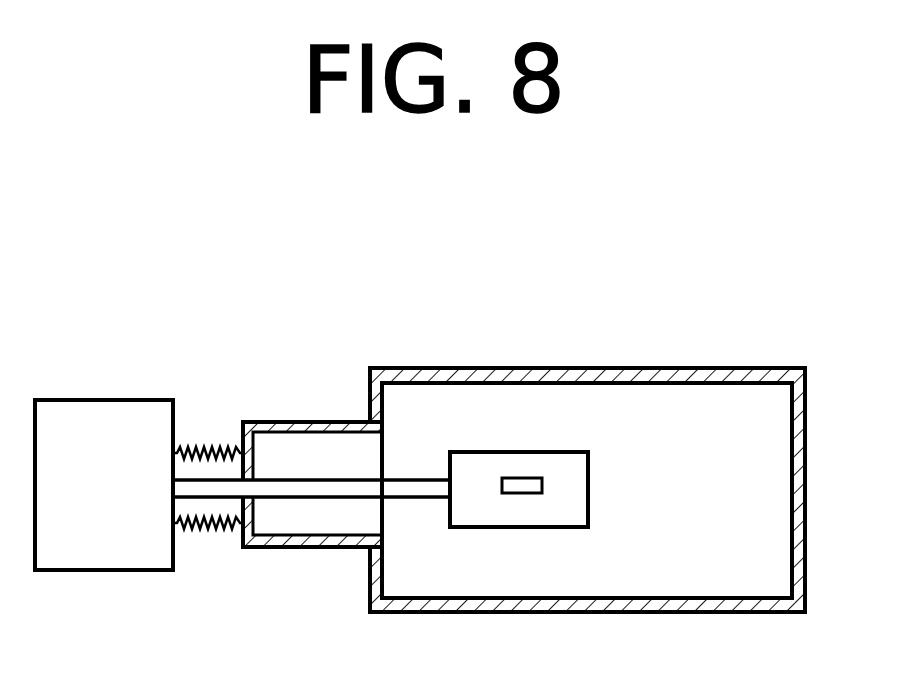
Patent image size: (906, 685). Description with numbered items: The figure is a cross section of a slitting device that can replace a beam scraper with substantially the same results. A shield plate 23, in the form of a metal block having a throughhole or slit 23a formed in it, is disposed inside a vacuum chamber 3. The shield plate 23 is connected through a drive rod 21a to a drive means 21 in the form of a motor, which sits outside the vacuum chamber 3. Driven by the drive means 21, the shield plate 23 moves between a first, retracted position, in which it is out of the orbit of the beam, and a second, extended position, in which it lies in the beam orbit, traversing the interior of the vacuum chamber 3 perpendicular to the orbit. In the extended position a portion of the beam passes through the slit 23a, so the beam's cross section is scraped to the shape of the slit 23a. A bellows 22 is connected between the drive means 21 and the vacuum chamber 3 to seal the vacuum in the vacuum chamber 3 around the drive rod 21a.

The vacuum chamber 3 is at (547, 368).
The drive means 21 is at (105, 418).
The drive rod 21a is at (290, 483).
The bellows 22 is at (205, 530).
The shield plate 23 is at (512, 512).
The slit 23a is at (542, 483).